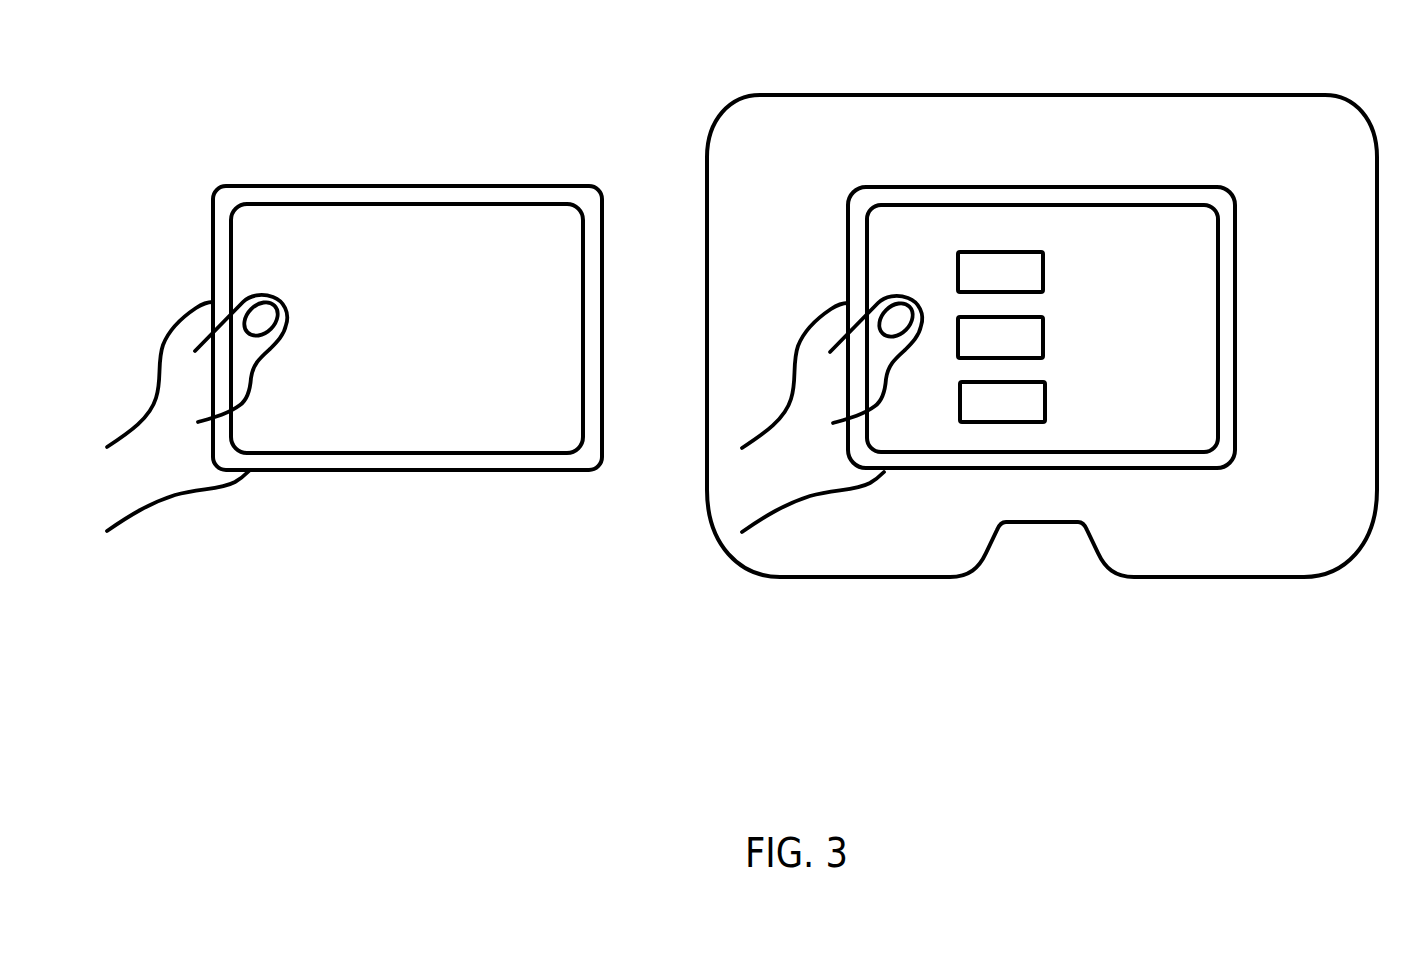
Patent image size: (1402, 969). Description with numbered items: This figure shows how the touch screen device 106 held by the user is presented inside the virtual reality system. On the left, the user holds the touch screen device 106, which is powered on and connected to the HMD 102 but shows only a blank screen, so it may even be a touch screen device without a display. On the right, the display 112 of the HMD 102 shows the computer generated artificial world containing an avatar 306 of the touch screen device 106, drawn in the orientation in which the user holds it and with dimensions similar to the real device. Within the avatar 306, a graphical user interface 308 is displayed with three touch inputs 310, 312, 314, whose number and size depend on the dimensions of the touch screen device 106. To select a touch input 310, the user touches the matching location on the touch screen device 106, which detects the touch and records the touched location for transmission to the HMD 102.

The HMD 102 is at (1042, 300).
The touch screen device 106 is at (415, 186).
The display 112 is at (798, 118).
The avatar 306 is at (1050, 187).
The graphical user interface 308 is at (1187, 242).
The touch input 310 is at (1000, 272).
The touch input 312 is at (1000, 337).
The touch input 314 is at (1002, 402).